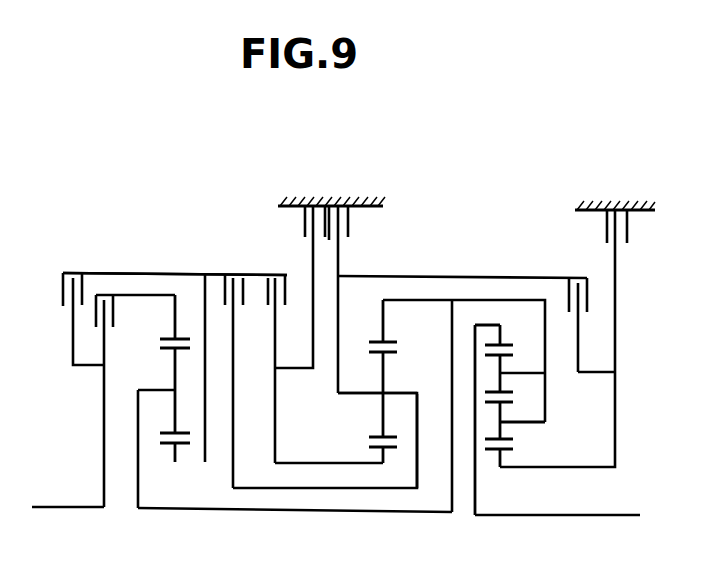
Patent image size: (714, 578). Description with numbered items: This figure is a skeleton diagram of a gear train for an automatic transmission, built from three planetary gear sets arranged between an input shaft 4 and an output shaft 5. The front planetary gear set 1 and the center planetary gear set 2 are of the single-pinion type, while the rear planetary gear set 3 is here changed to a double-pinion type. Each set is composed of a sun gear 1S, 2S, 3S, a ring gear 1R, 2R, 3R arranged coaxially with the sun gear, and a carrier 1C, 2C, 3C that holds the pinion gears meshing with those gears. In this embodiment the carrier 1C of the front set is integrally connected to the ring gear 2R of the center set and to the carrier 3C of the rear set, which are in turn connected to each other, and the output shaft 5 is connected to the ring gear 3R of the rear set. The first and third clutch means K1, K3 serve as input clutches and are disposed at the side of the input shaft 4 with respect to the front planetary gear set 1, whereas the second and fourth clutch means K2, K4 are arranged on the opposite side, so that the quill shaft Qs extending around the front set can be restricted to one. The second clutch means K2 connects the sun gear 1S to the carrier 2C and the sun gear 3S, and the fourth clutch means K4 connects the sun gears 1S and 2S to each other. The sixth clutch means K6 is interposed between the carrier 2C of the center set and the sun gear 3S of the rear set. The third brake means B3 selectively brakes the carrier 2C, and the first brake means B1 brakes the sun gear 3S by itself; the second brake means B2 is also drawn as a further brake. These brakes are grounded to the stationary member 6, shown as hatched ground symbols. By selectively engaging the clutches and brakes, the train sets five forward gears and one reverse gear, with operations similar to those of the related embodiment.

The transmission case (fixed member) 6 is at (333, 205).
The first brake means B1 is at (631, 227).
The second brake B2 is at (300, 224).
The third brake means B3 is at (350, 299).
The first clutch means K1 is at (135, 391).
The second clutch means K2 is at (233, 370).
The third clutch means K3 is at (83, 308).
The fourth clutch means K4 is at (274, 358).
The sixth clutch means K6 is at (576, 314).
The quill shaft Qs is at (173, 273).
The front planetary gear set 1 is at (153, 423).
The center planetary gear set 2 is at (376, 429).
The rear planetary gear set 3 is at (532, 436).
The ring gear 1R is at (166, 339).
The carrier 1C is at (149, 390).
The sun gear 1S is at (174, 445).
The ring gear 2R is at (386, 341).
The carrier 2C is at (400, 393).
The sun gear 2S is at (386, 475).
The ring gear 3R is at (501, 343).
The carrier 3C is at (524, 422).
The sun gear 3S is at (502, 478).
The input shaft 4 is at (66, 507).
The output shaft 5 is at (610, 514).